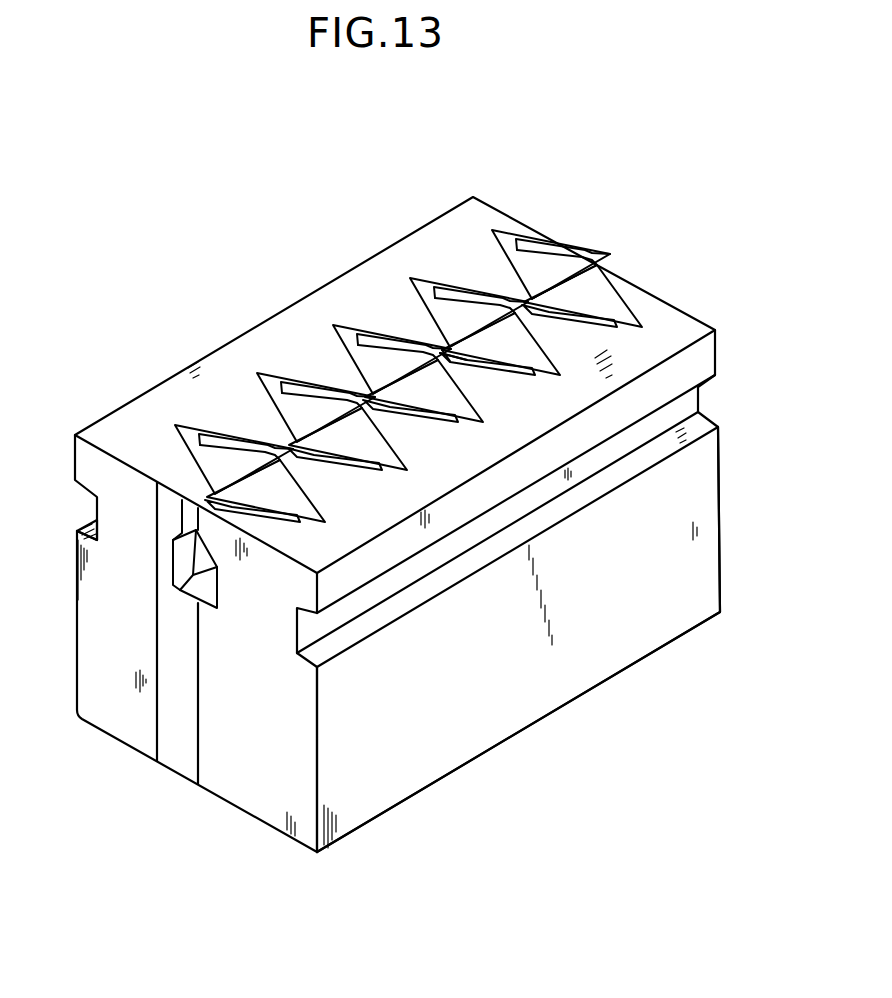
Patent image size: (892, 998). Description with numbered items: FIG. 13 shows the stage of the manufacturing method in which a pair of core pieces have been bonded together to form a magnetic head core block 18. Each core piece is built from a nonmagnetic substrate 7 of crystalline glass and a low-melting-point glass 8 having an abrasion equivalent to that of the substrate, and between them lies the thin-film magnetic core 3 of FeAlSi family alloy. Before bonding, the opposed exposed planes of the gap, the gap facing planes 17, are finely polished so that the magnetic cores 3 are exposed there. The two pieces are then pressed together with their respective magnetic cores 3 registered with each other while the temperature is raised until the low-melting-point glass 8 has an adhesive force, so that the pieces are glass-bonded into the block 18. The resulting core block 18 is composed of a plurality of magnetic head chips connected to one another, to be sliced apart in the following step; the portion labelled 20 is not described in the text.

The magnetic core 3 is at (465, 292).
The nonmagnetic substrate 7 is at (273, 335).
The low-melting-point glass 8 is at (593, 285).
The gap facing plane 17 is at (197, 763).
The magnetic head core block 18 is at (585, 673).
The bridge portion 20 is at (440, 352).